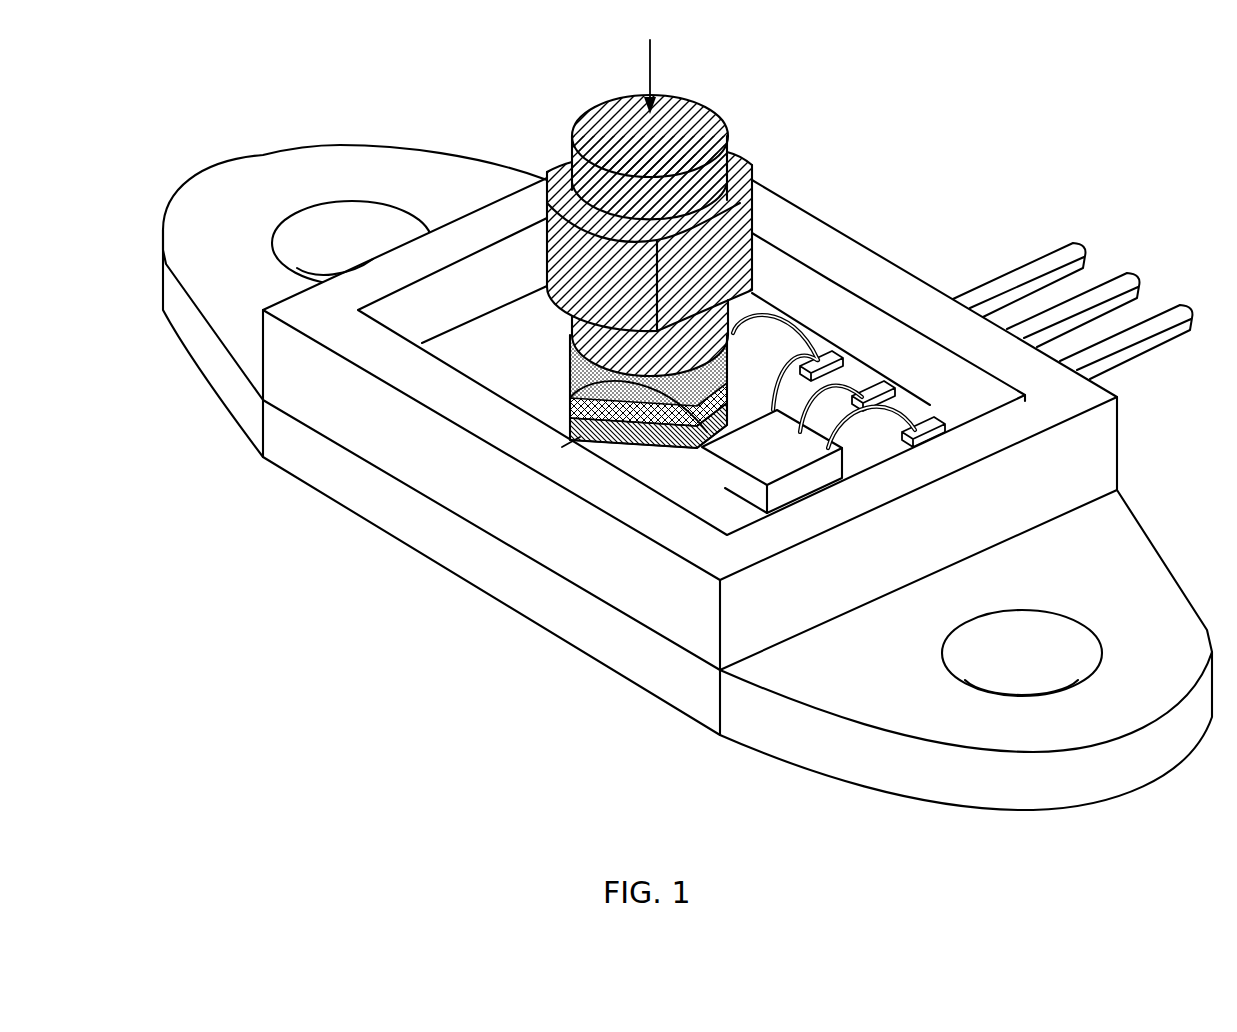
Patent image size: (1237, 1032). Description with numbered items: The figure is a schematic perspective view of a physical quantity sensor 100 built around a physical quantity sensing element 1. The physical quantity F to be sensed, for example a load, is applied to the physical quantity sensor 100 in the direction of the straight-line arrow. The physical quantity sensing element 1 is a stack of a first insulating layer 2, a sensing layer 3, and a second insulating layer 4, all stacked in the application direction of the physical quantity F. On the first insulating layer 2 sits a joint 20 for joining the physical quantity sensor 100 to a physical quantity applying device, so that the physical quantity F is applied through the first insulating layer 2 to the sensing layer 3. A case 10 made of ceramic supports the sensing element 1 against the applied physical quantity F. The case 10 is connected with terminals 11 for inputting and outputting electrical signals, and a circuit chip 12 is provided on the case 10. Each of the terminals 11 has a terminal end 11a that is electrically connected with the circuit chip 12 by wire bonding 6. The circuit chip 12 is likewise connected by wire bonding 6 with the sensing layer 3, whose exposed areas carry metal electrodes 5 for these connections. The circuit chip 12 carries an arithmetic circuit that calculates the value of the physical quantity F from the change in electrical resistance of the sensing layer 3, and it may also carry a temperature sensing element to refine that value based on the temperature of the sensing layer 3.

The physical quantity sensing element 1 is at (482, 101).
The first insulating layer 2 is at (568, 378).
The sensing layer 3 is at (568, 405).
The second insulating layer 4 is at (568, 430).
The metal electrodes 5 is at (576, 447).
The wire bonding 6 is at (860, 377).
The case 10 is at (192, 212).
The terminals 11 is at (1040, 260).
The terminal end 11a is at (822, 363).
The circuit chip 12 is at (762, 455).
The joint 20 is at (616, 107).
The physical quantity sensor 100 is at (803, 128).